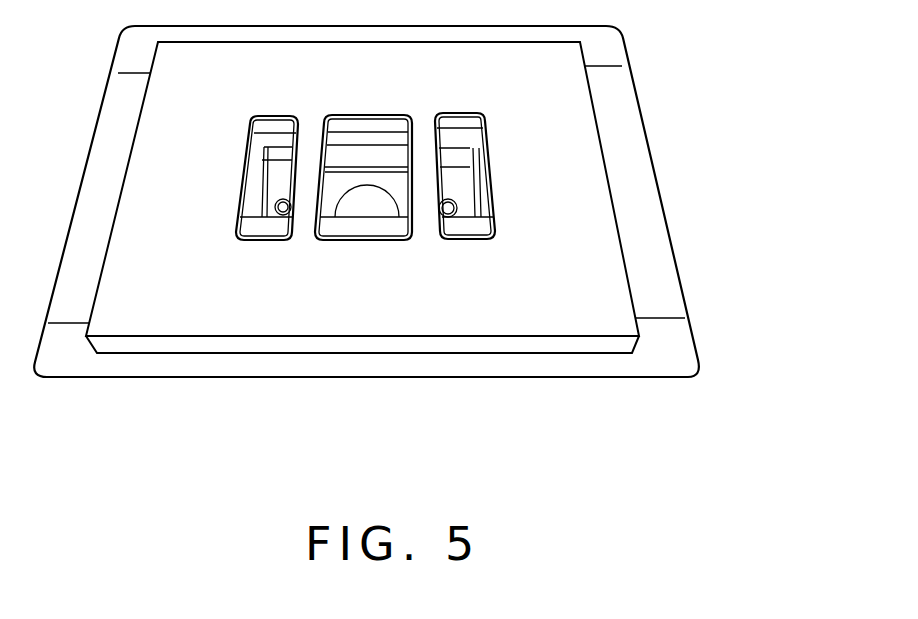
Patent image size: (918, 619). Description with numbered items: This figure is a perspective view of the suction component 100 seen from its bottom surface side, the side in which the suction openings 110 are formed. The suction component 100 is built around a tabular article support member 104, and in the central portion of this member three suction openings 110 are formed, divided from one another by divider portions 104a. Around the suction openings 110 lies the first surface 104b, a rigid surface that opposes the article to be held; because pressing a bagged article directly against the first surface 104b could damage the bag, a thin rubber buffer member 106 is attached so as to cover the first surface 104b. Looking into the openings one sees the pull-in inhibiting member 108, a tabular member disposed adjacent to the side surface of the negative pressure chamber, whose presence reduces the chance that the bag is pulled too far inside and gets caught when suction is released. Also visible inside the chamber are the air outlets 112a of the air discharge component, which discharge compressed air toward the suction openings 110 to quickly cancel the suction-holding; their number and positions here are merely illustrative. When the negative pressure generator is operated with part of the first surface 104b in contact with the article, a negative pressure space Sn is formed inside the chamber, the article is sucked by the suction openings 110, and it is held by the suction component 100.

The suction component 100 is at (637, 41).
The article support member 104 is at (148, 339).
The divider portions 104a is at (299, 225).
The first surface 104b is at (543, 315).
The buffer member 106 is at (283, 326).
The pull-in inhibiting member 108 is at (357, 130).
The suction openings 110 is at (262, 140).
The air outlets 112a is at (465, 202).
The negative pressure space Sn is at (455, 188).